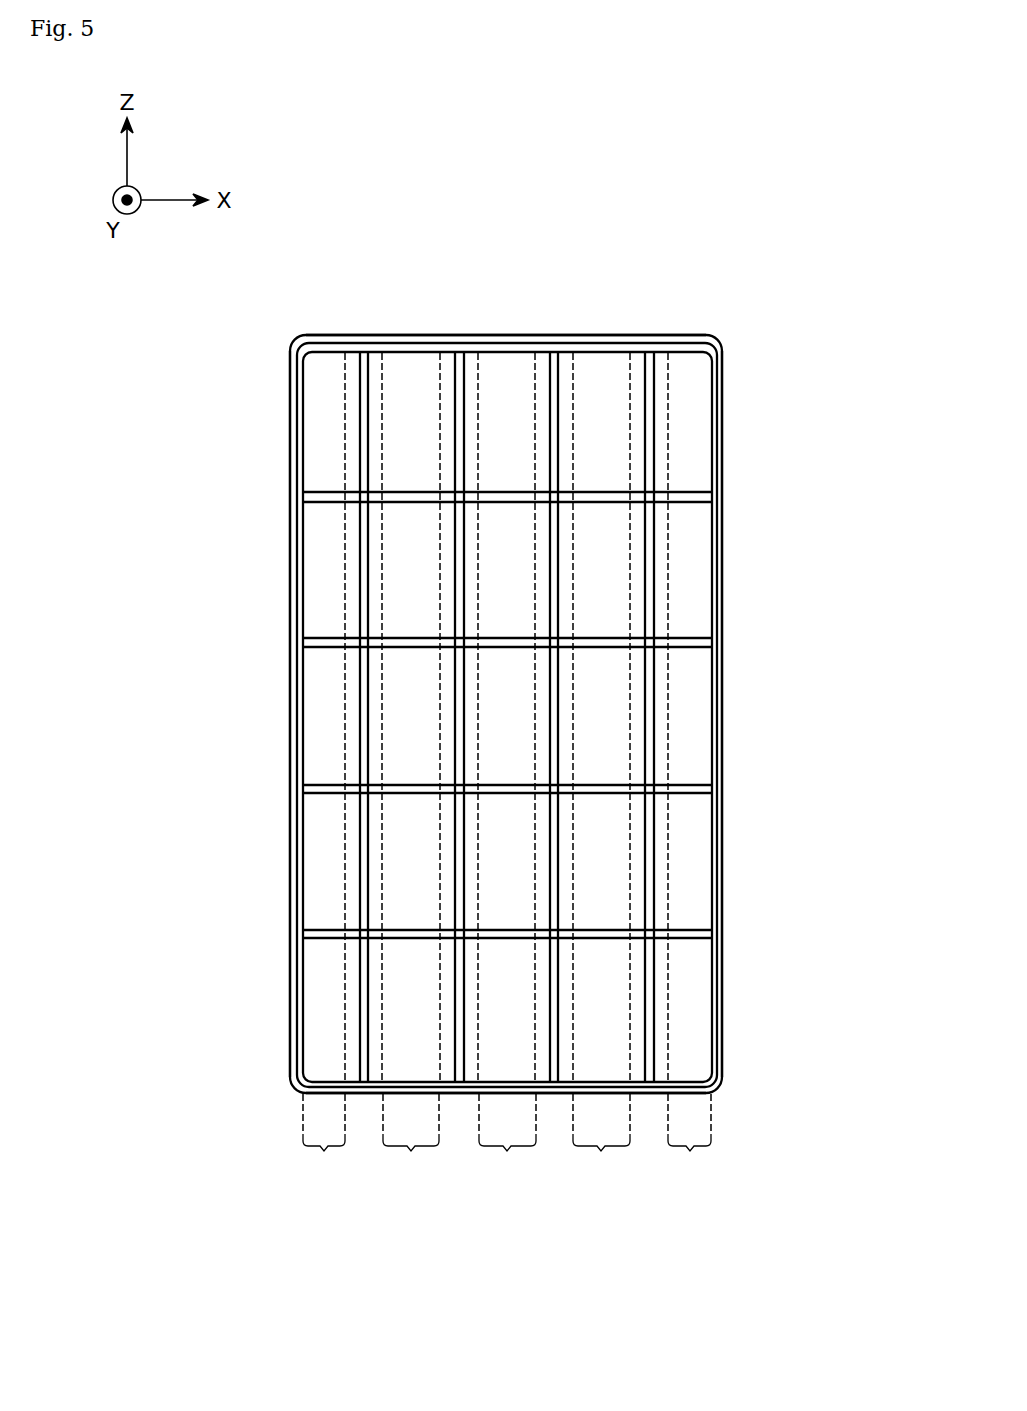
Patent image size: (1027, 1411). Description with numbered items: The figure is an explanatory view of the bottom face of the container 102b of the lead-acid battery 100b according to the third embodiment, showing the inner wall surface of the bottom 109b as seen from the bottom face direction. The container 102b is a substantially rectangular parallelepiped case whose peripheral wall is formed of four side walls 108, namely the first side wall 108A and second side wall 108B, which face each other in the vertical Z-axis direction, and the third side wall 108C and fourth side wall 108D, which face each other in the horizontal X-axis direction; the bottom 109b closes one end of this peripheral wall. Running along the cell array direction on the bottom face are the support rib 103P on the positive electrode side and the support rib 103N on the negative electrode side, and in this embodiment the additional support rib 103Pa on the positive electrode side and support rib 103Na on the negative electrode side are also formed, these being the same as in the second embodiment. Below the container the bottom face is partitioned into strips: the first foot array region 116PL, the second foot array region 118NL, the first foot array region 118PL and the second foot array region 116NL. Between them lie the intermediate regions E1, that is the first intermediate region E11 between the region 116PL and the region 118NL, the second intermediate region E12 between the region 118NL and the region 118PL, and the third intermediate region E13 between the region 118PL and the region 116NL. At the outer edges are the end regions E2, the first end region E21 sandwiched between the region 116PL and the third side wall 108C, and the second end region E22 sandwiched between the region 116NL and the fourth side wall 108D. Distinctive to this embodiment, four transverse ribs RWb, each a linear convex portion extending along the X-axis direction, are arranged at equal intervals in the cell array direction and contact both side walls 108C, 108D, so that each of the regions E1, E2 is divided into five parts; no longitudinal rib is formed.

The lead-acid battery 100b is at (501, 704).
The container 102b is at (579, 620).
The side wall 108 is at (501, 747).
The first side wall 108A is at (630, 335).
The second side wall 108B is at (547, 1095).
The third side wall 108C is at (290, 930).
The fourth side wall 108D is at (725, 908).
The bottom 109b is at (697, 728).
The support rib on the positive electrode side 103P is at (283, 679).
The support rib on the positive electrode side 103Pa is at (396, 679).
The support rib on the negative electrode side 103N is at (728, 679).
The support rib on the negative electrode side 103Na is at (626, 679).
The first foot array region 116PL is at (355, 335).
The second foot array region 116NL is at (668, 335).
The first foot array region 118PL is at (562, 335).
The second foot array region 118NL is at (455, 335).
The transverse rib RWb is at (324, 504).
The intermediate region E1 is at (505, 1150).
The first intermediate region E11 is at (410, 1150).
The second intermediate region E12 is at (506, 1150).
The third intermediate region E13 is at (600, 1150).
The end region E2 is at (506, 1150).
The first end region E21 is at (322, 1150).
The second end region E22 is at (689, 1150).